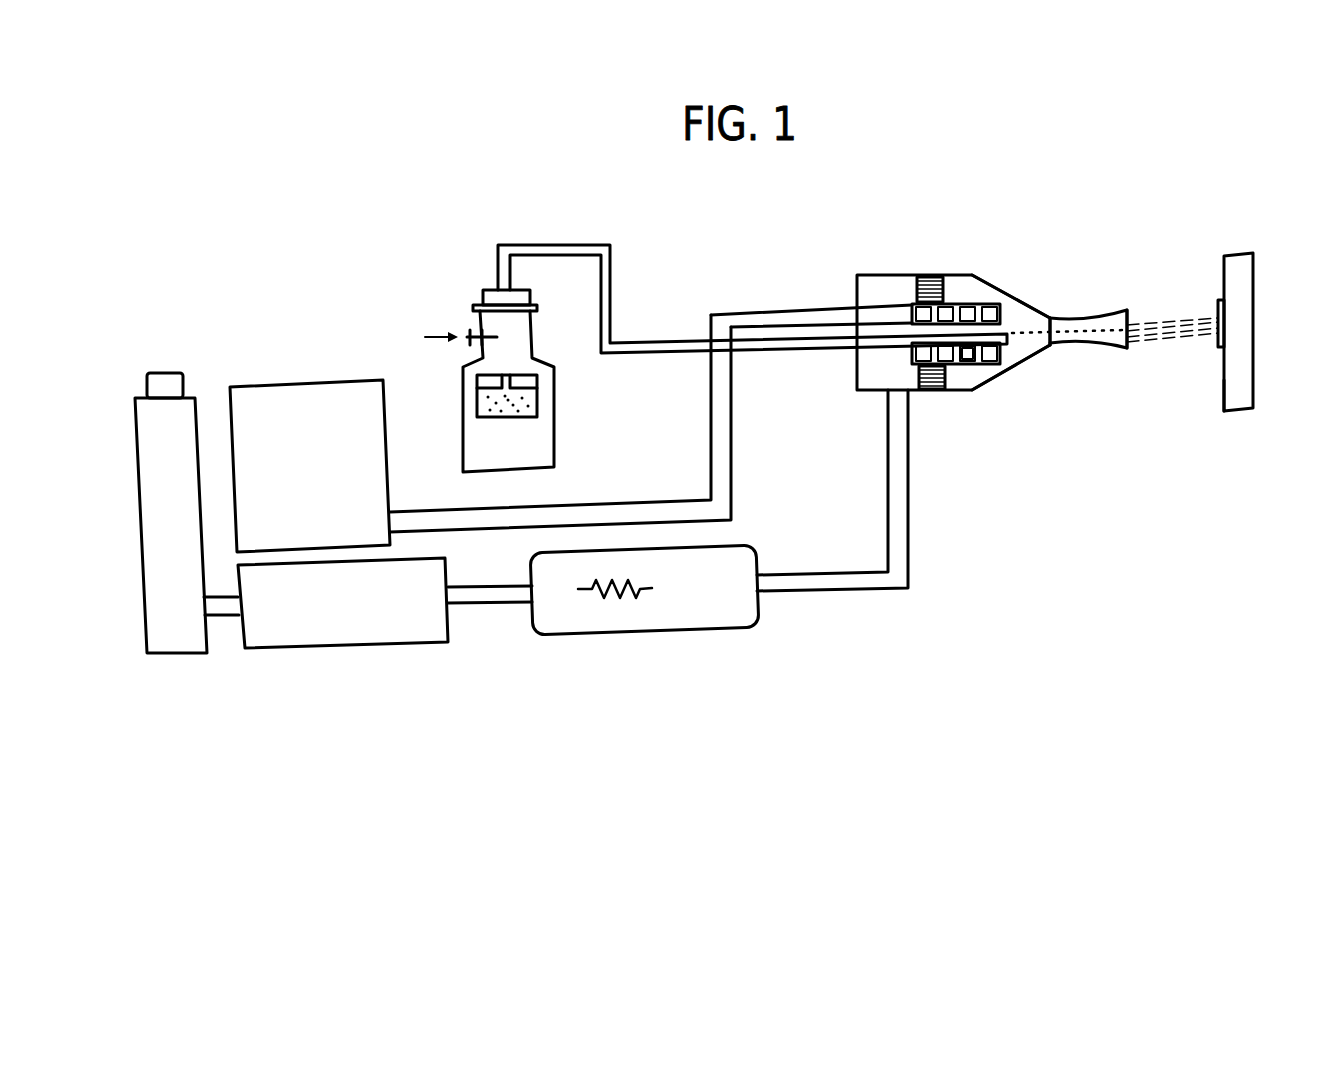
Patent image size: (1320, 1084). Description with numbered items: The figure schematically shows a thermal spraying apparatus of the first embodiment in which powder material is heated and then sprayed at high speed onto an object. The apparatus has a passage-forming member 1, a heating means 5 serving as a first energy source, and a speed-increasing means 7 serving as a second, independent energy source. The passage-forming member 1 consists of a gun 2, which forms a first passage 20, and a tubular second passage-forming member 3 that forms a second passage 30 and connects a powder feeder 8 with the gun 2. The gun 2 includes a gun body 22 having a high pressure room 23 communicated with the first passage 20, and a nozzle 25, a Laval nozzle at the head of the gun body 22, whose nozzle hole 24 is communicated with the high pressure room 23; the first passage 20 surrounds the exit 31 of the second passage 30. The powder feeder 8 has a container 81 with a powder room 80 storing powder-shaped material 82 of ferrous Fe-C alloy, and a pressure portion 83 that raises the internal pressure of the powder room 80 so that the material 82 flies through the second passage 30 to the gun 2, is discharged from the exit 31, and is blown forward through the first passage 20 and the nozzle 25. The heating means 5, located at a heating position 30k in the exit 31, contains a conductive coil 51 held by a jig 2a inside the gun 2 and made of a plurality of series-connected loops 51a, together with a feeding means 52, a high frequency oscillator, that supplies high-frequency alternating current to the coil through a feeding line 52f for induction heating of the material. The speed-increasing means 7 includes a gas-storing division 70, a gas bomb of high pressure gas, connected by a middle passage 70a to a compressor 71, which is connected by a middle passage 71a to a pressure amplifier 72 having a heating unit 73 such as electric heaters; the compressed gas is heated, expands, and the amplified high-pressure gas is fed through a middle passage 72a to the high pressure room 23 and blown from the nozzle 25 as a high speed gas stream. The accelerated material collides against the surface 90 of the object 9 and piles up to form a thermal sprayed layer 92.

The passage-forming member 1 is at (1000, 338).
The gun 2 is at (971, 328).
The jig 2a is at (925, 280).
The gun body 22 is at (963, 388).
The high pressure room 23 is at (858, 366).
The second passage-forming member 3 is at (612, 262).
The heating means 5 is at (980, 285).
The conductive coil 51 is at (963, 310).
The loops 51a is at (912, 317).
The second passage 30 is at (673, 340).
The heating position 30k is at (967, 360).
The first passage 20 is at (1027, 314).
The exit 31 is at (1007, 340).
The nozzle hole 24 is at (1115, 340).
The nozzle 25 is at (1115, 312).
The speed-increasing means 7 is at (673, 620).
The gas-storing division 70 is at (178, 645).
The middle passage 70a is at (223, 618).
The compressor 71 is at (365, 632).
The middle passage 71a is at (487, 607).
The pressure amplifier 72 is at (585, 635).
The middle passage 72a is at (910, 578).
The heating unit 73 is at (627, 600).
The feeding means 52 is at (390, 440).
The feeding line 52f is at (733, 470).
The powder feeder 8 is at (520, 375).
The powder room 80 is at (545, 453).
The container 81 is at (553, 388).
The material 82 is at (505, 412).
The pressure portion 83 is at (472, 332).
The object 9 is at (1245, 393).
The surface 90 is at (1224, 382).
The thermal sprayed layer 92 is at (1217, 302).